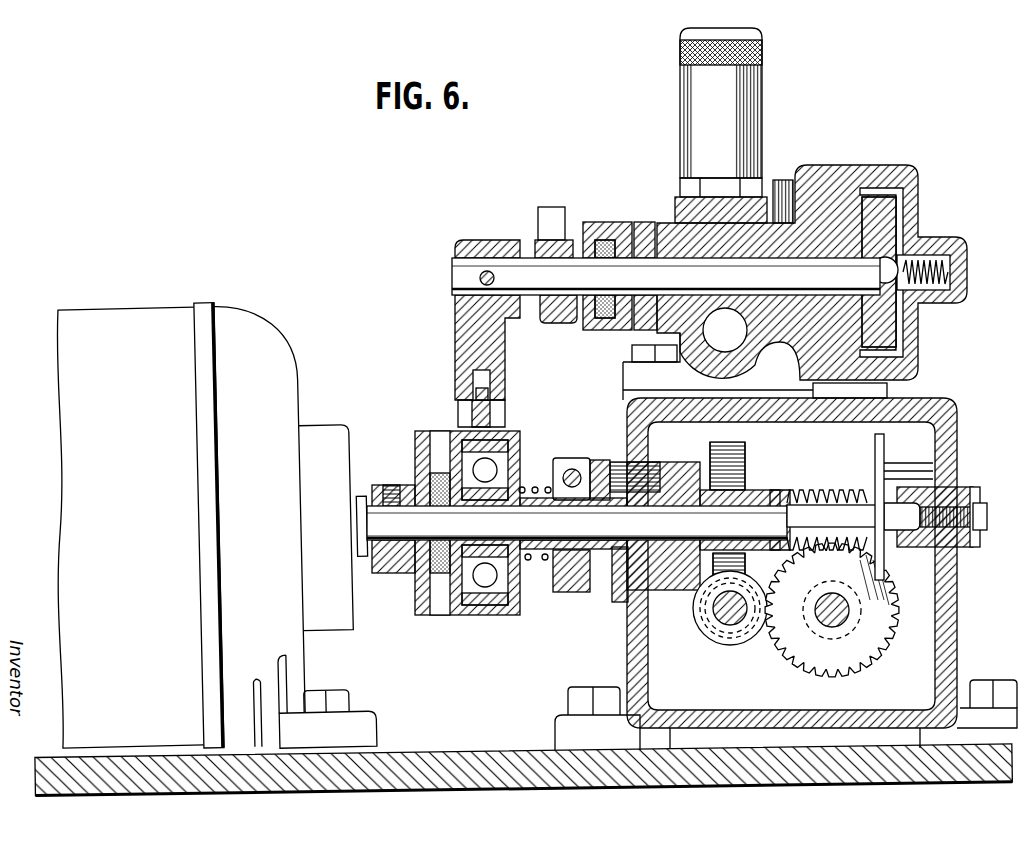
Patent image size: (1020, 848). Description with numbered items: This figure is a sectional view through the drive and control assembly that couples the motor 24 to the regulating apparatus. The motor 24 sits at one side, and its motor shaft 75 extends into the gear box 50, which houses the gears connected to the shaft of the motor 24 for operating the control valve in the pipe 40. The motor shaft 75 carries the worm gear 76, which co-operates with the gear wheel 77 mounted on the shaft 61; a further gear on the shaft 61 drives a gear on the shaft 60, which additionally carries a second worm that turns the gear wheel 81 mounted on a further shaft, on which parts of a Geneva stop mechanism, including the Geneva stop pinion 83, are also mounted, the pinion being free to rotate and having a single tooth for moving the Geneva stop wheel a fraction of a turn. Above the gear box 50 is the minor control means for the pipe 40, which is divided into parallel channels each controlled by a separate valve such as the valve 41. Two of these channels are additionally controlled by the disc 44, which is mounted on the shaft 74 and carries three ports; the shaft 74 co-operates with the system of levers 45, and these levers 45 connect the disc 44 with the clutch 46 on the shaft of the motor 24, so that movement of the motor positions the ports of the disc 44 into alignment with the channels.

The motor 24 is at (278, 414).
The pipe 40 is at (705, 340).
The valve 41 is at (697, 121).
The disc 44 is at (882, 212).
The levers 45 is at (472, 248).
The clutch 46 is at (425, 440).
The gear box 50 is at (957, 597).
The shaft 60 is at (740, 623).
The shaft 61 is at (845, 625).
The shaft 74 is at (530, 272).
The motor shaft 75 is at (618, 528).
The worm gear 76 is at (815, 502).
The gear wheel 77 is at (891, 624).
The gear wheel 81 is at (746, 458).
The Geneva stop pinion 83 is at (872, 462).